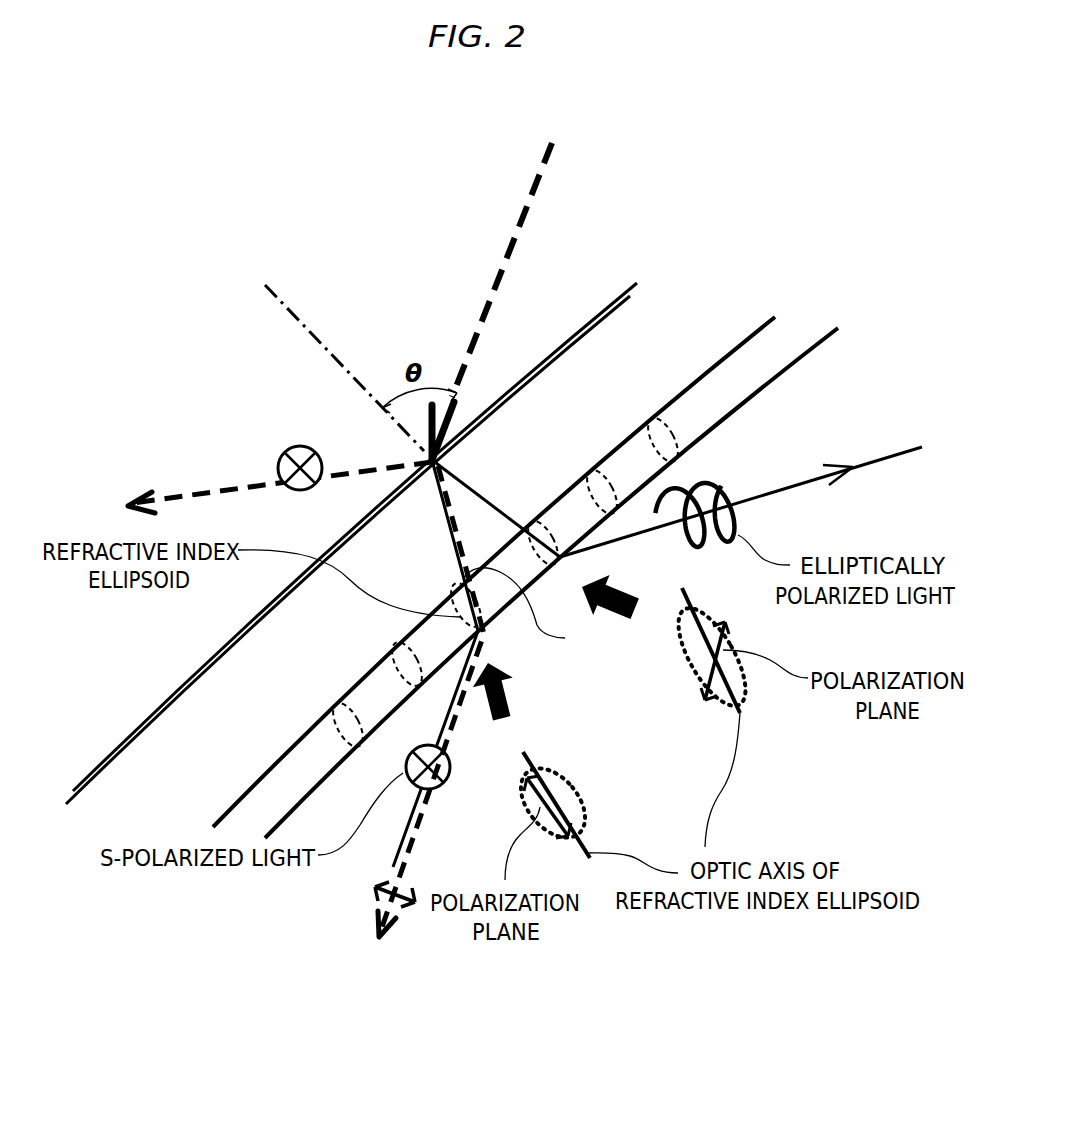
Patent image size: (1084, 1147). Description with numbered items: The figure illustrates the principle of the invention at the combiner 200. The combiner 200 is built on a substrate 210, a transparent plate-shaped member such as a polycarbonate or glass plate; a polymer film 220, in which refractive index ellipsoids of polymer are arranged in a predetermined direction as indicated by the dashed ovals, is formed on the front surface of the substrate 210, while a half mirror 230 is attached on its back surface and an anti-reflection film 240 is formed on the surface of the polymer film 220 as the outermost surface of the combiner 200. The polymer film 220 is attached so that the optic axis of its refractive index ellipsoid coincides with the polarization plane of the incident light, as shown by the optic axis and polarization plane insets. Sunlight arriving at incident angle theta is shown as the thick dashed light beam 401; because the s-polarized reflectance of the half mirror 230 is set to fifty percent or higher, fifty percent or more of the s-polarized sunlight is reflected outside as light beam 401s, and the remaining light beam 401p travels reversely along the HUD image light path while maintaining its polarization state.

The combiner 200 is at (865, 307).
The substrate 210 is at (628, 338).
The polymer film 220 is at (712, 408).
The half mirror 230 is at (578, 332).
The anti-reflection (AR) film 240 is at (772, 382).
The light beam 401 is at (505, 250).
The light beam 401s is at (240, 470).
The light beam 401p is at (526, 701).